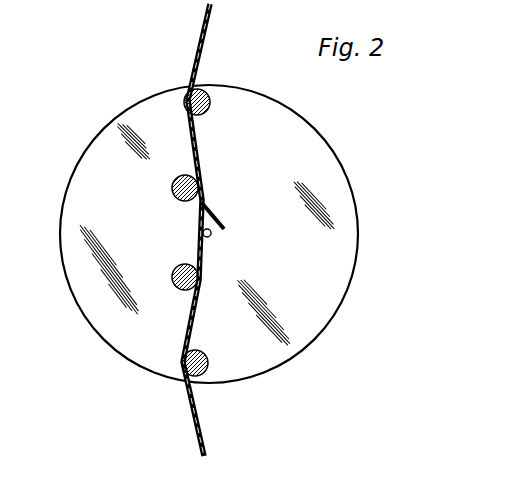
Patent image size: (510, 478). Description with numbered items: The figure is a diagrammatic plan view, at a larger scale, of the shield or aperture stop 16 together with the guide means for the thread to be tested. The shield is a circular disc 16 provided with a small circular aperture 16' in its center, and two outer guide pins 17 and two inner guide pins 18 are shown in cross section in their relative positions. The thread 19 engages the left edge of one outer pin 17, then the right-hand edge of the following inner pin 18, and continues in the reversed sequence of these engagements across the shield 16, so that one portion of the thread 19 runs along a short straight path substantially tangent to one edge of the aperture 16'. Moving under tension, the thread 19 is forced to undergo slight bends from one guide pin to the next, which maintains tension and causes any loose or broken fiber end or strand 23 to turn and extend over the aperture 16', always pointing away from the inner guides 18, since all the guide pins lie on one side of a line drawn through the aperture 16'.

The shield or aperture stop 16 is at (217, 234).
The circular aperture 16' is at (226, 248).
The outer guide pins 17 is at (210, 108).
The inner guide pins 18 is at (173, 191).
The thread 19 is at (206, 34).
The broken fiber end or strand 23 is at (219, 214).